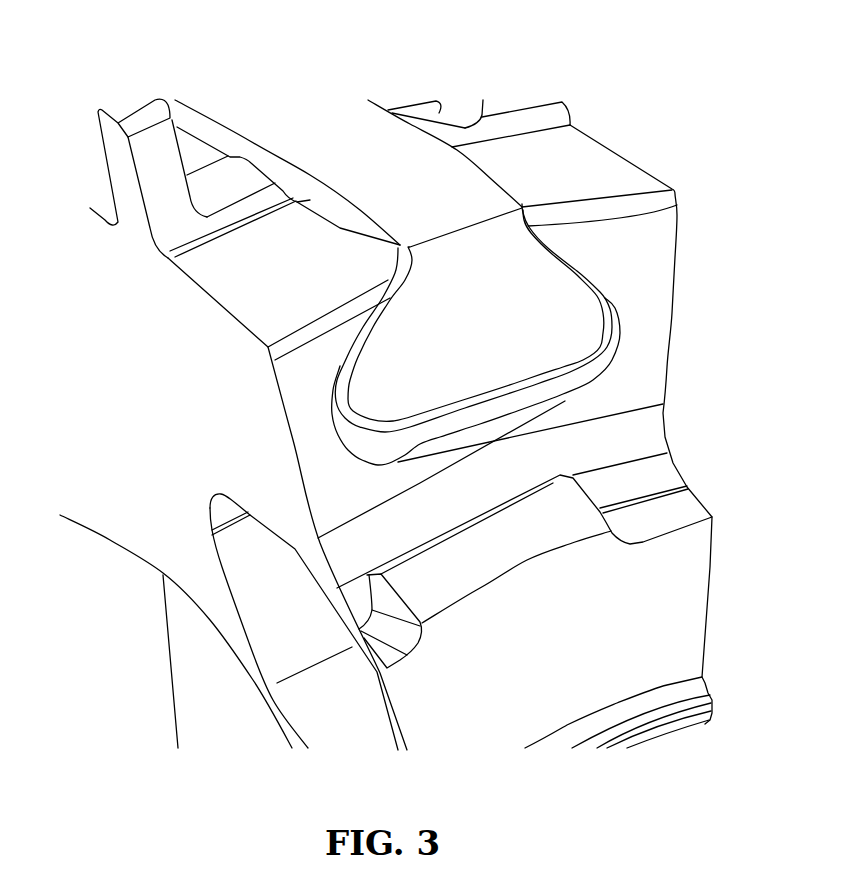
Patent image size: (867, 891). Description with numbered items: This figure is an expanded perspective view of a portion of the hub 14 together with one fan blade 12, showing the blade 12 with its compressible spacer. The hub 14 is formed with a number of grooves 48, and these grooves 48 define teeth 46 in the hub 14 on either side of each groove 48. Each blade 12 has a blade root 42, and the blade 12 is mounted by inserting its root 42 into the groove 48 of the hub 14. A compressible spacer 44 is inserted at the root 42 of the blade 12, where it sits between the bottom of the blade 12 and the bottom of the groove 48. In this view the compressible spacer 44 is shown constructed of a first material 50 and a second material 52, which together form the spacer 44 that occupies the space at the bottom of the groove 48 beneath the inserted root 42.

The blade 12 is at (372, 140).
The hub 14 is at (638, 257).
The blade root 42 is at (508, 250).
The compressible spacer 44 is at (592, 377).
The teeth 46 is at (602, 177).
The groove 48 is at (608, 340).
The first material 50 is at (378, 439).
The second material 52 is at (563, 399).